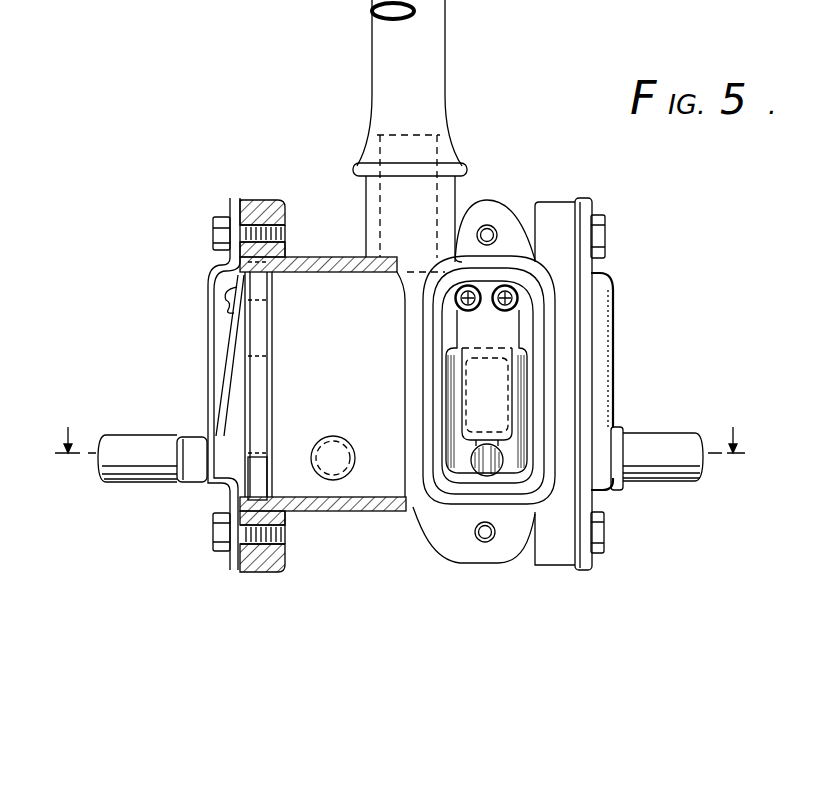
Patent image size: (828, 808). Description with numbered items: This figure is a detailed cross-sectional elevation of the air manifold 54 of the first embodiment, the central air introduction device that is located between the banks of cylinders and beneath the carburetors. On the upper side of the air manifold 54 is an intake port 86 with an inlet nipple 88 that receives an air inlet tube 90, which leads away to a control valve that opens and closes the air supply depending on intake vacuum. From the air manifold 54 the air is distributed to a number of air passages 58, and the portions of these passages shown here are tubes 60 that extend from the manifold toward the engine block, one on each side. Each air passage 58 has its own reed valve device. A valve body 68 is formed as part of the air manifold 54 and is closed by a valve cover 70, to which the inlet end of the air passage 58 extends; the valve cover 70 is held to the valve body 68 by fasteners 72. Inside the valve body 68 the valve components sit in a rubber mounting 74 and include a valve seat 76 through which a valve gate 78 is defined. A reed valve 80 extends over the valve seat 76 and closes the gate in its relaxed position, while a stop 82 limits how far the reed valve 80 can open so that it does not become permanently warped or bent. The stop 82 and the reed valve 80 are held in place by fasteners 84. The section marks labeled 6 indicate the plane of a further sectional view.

The air manifold 54 is at (193, 270).
The air inlet tube 90 is at (447, 86).
The inlet nipple 88 is at (378, 150).
The intake port 86 is at (390, 276).
The fasteners 72 is at (216, 218).
The valve body 68 is at (270, 572).
The valve cover 70 is at (210, 344).
The fasteners 84 is at (222, 306).
The stop 82 is at (230, 384).
The reed valve 80 is at (250, 417).
The rubber mounting 74 is at (262, 273).
The valve seat 76 is at (260, 365).
The valve gate 78 is at (258, 392).
The tubes 60 is at (138, 436).
The air passages 58 is at (196, 450).
The section line 6 is at (400, 428).